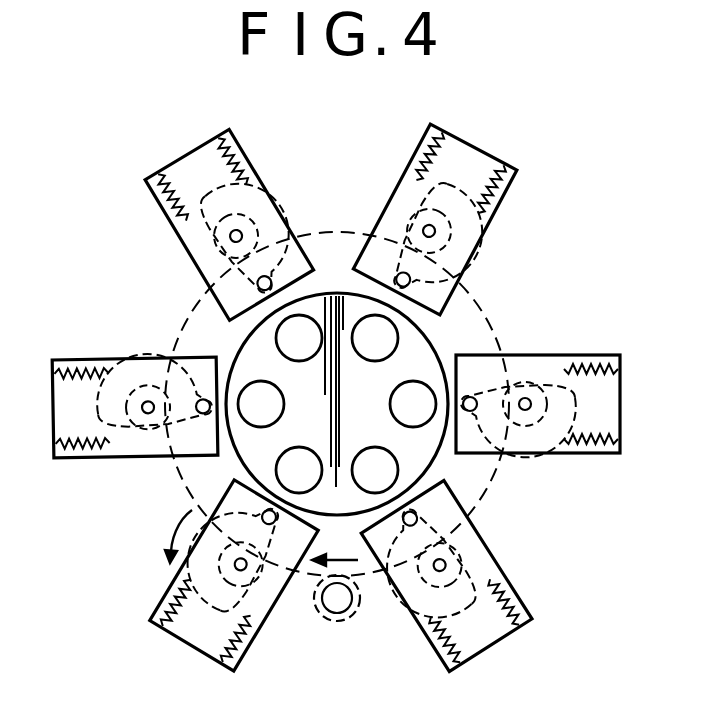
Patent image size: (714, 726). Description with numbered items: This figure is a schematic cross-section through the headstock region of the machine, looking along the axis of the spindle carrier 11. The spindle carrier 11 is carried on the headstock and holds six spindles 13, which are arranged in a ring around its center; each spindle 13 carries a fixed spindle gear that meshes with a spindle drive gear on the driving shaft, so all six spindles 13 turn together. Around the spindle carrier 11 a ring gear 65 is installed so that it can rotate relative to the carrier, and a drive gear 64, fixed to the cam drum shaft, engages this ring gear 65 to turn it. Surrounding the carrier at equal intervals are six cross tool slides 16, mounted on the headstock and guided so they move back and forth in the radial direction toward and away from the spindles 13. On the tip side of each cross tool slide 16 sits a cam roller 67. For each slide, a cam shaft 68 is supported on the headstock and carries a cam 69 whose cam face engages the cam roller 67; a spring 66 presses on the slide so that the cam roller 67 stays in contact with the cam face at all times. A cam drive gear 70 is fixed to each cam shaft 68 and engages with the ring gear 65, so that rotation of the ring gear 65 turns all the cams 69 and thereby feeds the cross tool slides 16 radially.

The spindle carrier 11 is at (440, 332).
The spindle 13 is at (310, 317).
The cross tool slide 16 is at (191, 160).
The drive gear 64 is at (349, 609).
The ring gear 65 is at (497, 468).
The spring 66 is at (68, 447).
The cam roller 67 is at (196, 399).
The cam shaft 68 is at (229, 237).
The cam 69 is at (112, 366).
The cam drive gear 70 is at (550, 446).